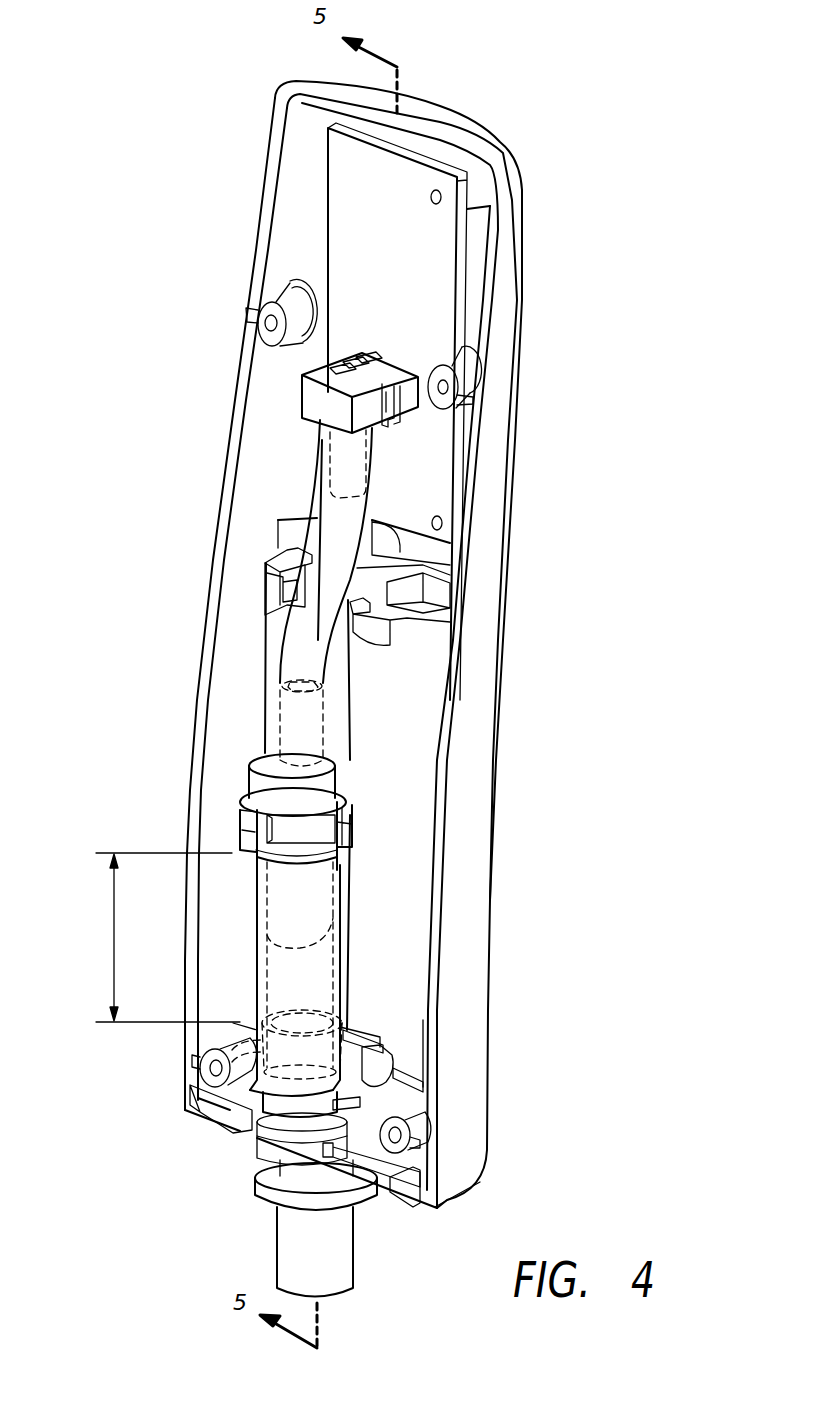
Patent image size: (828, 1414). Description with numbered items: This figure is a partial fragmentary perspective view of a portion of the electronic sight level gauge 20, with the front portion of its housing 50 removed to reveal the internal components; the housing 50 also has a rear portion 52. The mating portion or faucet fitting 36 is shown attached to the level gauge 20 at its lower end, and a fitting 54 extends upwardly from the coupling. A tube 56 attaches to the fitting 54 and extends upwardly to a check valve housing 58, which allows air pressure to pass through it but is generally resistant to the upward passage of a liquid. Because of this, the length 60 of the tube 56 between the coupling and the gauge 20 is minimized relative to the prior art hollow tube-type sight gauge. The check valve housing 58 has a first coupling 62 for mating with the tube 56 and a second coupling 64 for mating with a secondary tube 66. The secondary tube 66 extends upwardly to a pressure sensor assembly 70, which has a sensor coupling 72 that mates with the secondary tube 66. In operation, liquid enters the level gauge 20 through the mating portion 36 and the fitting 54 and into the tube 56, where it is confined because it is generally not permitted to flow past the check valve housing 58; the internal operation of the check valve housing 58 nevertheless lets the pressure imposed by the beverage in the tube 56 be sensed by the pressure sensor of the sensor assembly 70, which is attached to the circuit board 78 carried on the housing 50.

The level gauge 20 is at (157, 127).
The mating portion or faucet fitting 36 is at (276, 1247).
The housing 50 is at (246, 278).
The rear portion 52 is at (245, 354).
The fitting 54 is at (205, 1075).
The tube 56 is at (320, 970).
The check valve housing 58 is at (363, 825).
The length 60 is at (168, 937).
The first coupling 62 is at (310, 898).
The second coupling 64 is at (312, 717).
The secondary tube 66 is at (297, 650).
The pressure sensor assembly 70 is at (285, 407).
The sensor coupling 72 is at (328, 457).
The circuit board 78 is at (347, 251).